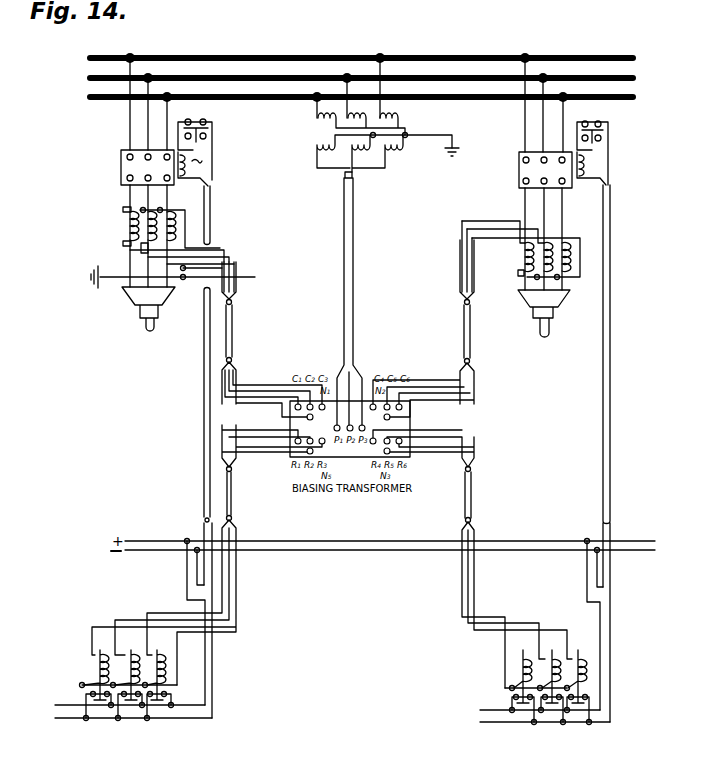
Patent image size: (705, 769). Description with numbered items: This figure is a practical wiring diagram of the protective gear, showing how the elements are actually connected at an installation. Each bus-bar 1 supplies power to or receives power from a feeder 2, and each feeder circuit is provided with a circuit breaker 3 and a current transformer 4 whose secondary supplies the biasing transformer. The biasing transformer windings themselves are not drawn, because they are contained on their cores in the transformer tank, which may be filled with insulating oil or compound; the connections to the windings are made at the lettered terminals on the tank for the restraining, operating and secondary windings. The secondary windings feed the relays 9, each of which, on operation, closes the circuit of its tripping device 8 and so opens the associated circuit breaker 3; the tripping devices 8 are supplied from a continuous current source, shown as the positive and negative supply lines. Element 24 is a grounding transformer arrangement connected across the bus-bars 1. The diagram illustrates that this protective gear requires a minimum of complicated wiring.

The bus-bar 1 is at (232, 95).
The feeder 2 is at (167, 128).
The circuit breaker 3 is at (120, 163).
The current transformer 4 is at (122, 233).
The tripping device 8 is at (586, 161).
The relay 9 is at (93, 663).
The grounding transformer 24 is at (371, 115).